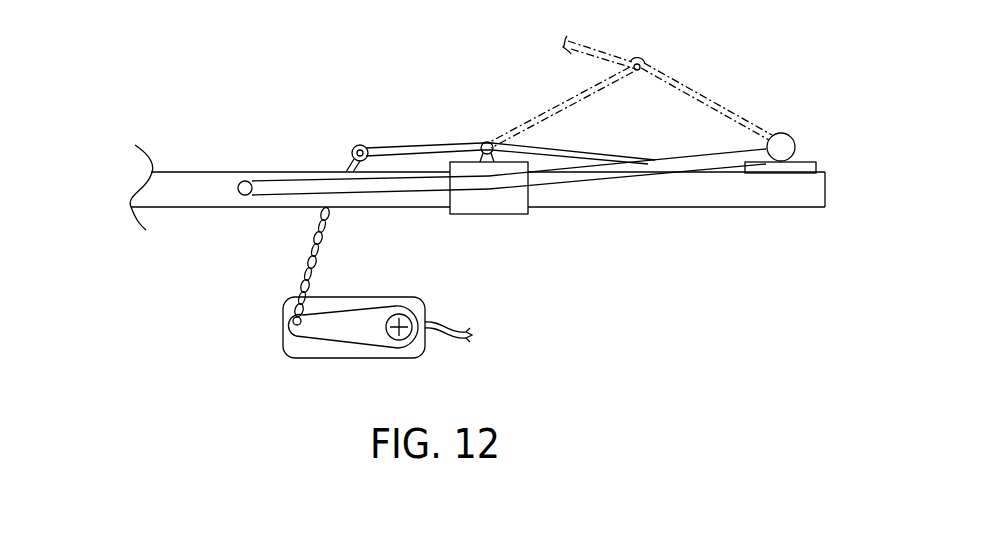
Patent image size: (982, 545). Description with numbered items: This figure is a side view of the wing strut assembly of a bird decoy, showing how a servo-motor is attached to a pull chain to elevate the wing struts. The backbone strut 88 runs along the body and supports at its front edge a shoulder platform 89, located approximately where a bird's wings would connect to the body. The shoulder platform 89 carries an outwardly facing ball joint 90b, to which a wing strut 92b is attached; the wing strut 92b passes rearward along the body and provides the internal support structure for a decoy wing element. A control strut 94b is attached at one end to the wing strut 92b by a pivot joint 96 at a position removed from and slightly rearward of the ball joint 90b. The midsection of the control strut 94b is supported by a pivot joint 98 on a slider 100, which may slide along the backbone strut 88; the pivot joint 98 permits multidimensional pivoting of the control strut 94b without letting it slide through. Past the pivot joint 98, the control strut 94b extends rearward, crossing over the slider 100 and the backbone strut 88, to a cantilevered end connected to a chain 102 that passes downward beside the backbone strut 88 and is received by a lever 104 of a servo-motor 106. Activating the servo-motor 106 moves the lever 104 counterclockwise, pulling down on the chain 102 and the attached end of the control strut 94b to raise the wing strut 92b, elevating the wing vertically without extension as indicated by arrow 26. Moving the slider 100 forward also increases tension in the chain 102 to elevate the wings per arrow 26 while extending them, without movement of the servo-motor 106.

The arrow 26 is at (693, 113).
The backbone strut 88 is at (788, 197).
The shoulder platform 89 is at (818, 168).
The ball joint 90b is at (786, 134).
The wing strut 92b is at (283, 190).
The control strut 94b is at (560, 148).
The pivot joint 96 is at (642, 163).
The pivot joint 98 is at (487, 142).
The slider 100 is at (492, 203).
The chain 102 is at (350, 166).
The lever 104 is at (335, 331).
The servo-motor 106 is at (425, 300).